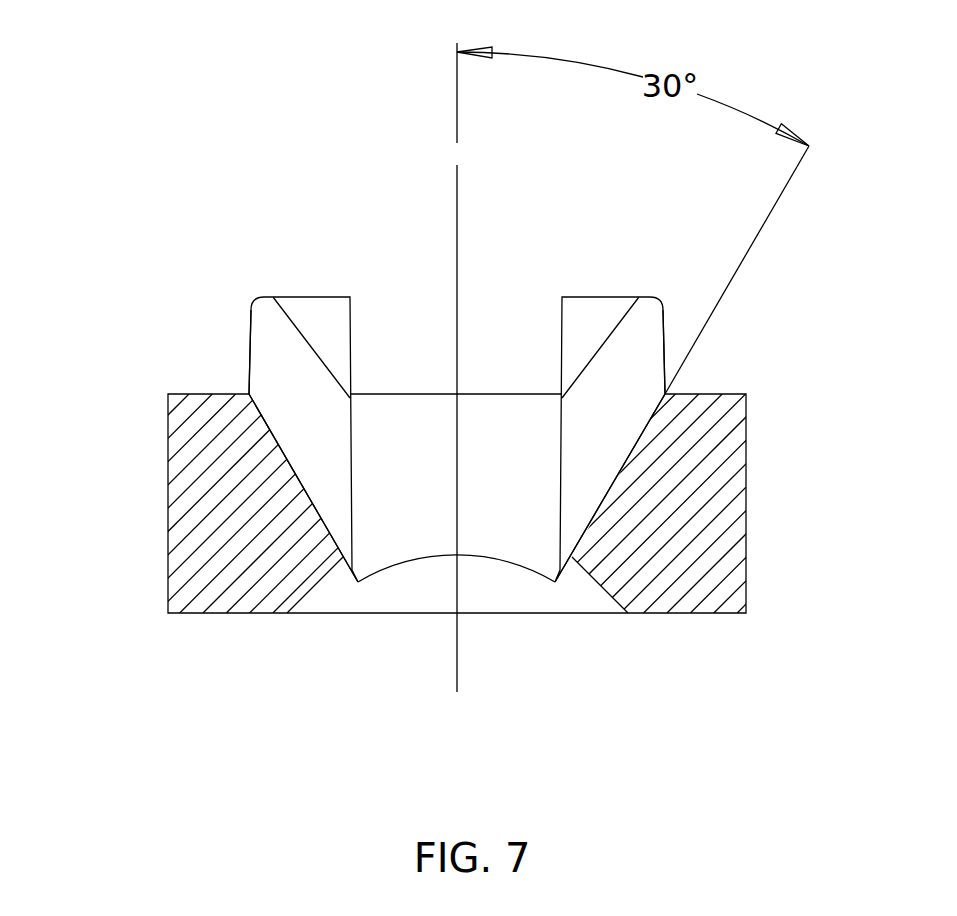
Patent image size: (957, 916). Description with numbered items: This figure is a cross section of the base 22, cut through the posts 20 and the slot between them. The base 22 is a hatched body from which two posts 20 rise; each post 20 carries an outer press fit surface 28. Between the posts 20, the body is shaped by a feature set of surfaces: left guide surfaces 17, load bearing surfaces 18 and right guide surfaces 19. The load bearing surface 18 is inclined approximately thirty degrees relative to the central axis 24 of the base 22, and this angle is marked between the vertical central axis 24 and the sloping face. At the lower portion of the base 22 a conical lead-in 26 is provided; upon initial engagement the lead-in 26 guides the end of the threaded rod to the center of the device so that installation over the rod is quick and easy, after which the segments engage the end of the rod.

The left guide surface 17 is at (353, 340).
The load bearing surface 18 is at (302, 480).
The right guide surface 19 is at (307, 398).
The post 20 is at (312, 296).
The base 22 is at (747, 468).
The central axis 24 is at (458, 243).
The conical lead-in 26 is at (600, 590).
The press fit surface 28 is at (247, 345).